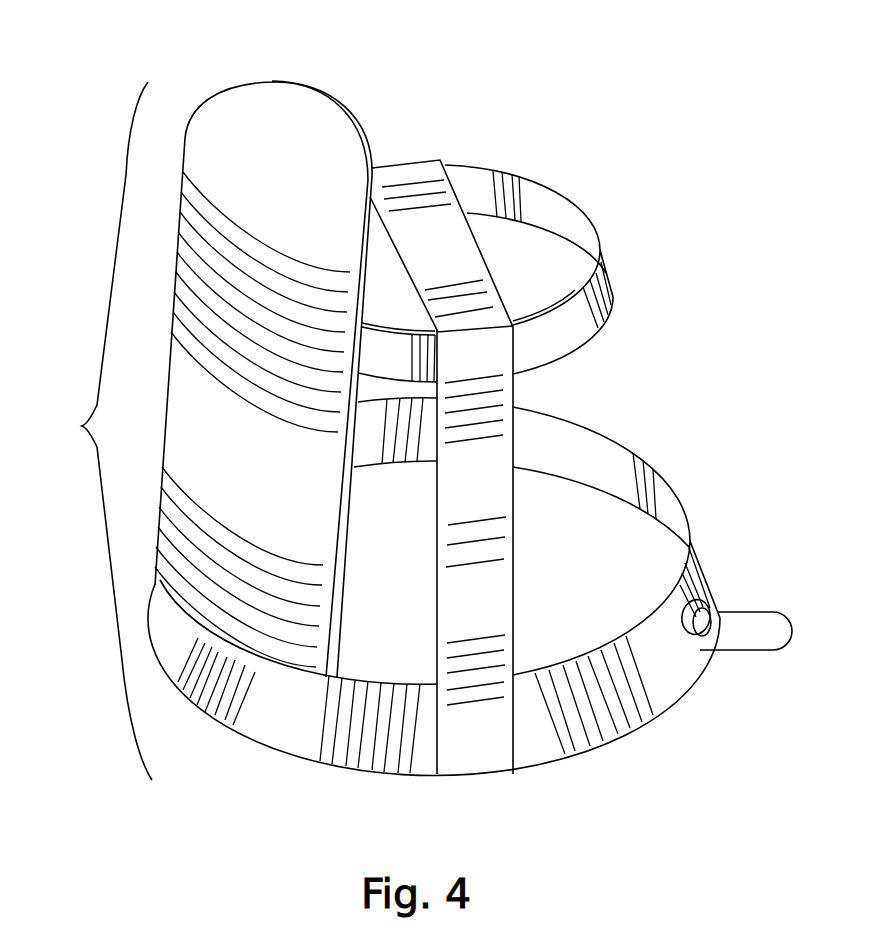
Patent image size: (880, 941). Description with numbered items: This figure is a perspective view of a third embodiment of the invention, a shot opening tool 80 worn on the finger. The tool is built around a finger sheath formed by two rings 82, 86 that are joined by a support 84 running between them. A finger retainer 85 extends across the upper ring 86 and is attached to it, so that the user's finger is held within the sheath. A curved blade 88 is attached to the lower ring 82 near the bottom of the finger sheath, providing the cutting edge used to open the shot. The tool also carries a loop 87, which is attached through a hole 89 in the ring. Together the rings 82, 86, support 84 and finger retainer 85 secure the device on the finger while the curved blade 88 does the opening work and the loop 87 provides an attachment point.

The shot opening tool 80 is at (420, 401).
The ring 82 is at (710, 570).
The support 84 is at (516, 590).
The finger retainer 85 is at (490, 262).
The ring 86 is at (612, 283).
The loop 87 is at (757, 651).
The curved blade 88 is at (237, 88).
The hole 89 is at (712, 604).